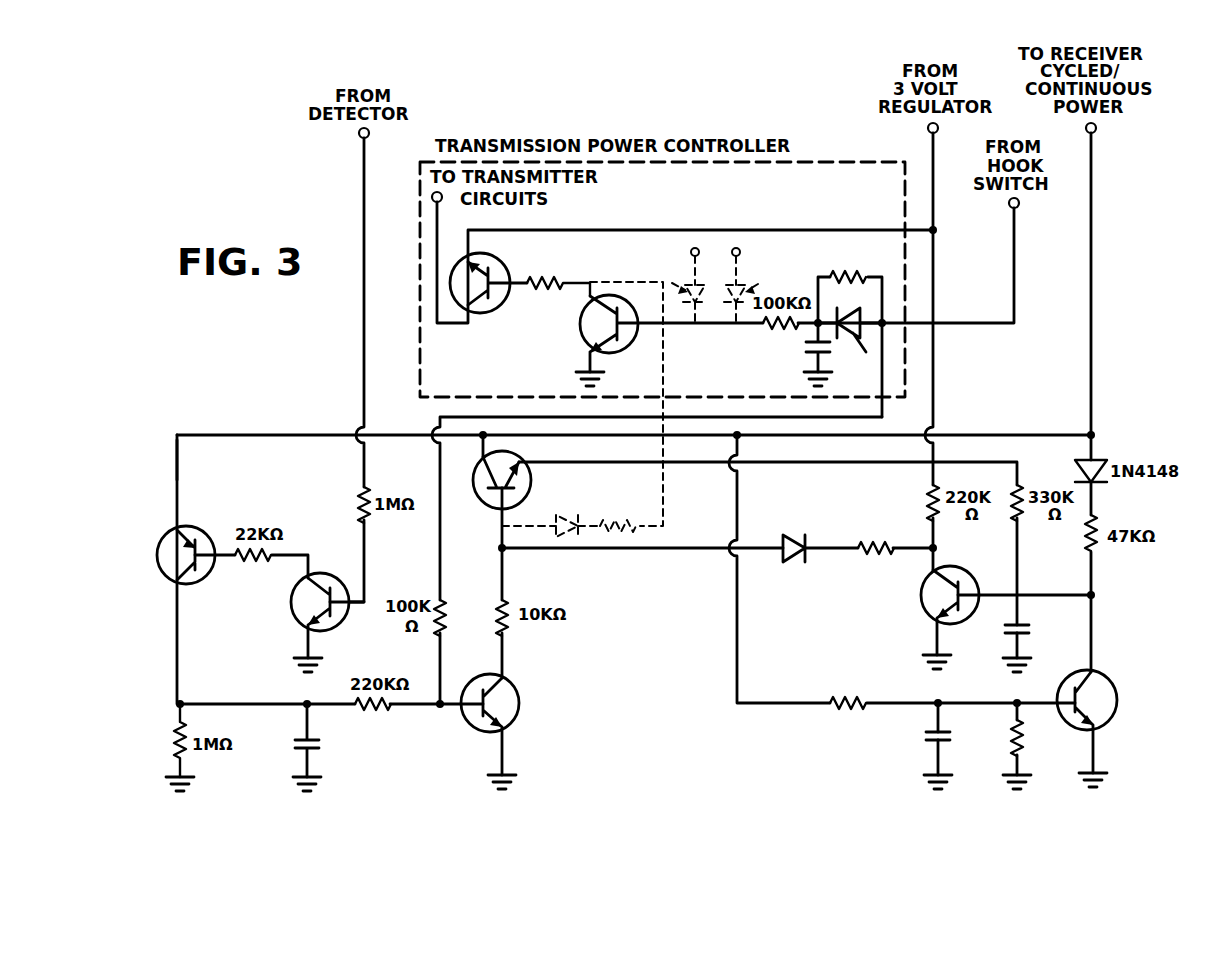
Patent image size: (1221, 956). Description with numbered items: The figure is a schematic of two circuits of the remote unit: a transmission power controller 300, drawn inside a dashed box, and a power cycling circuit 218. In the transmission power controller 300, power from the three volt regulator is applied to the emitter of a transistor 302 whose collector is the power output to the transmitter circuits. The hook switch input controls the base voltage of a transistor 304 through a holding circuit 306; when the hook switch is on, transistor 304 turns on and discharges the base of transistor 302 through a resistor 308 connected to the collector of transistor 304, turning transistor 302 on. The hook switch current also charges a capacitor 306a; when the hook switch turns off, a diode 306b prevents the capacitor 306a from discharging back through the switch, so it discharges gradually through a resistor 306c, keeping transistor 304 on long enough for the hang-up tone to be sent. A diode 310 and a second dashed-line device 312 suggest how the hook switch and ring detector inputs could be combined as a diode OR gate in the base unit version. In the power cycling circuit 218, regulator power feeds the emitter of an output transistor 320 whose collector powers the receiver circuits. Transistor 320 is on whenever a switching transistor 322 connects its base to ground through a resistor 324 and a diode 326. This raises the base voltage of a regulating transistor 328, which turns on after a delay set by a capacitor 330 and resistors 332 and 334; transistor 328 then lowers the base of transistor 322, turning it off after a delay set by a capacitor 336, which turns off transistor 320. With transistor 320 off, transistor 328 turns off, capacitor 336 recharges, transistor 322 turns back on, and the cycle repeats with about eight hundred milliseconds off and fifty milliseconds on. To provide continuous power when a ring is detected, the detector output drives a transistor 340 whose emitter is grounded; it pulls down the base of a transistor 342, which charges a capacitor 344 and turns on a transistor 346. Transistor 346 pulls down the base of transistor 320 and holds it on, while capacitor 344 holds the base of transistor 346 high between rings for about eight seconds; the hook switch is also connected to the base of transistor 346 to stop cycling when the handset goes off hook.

The remote unit power cycling circuit 218 is at (177, 482).
The transmission power controller 300 is at (840, 162).
The transistor 302 is at (500, 266).
The transistor 304 is at (592, 336).
The holding circuit 306 is at (802, 307).
The capacitor 306a is at (806, 343).
The diode 306b is at (850, 339).
The resistor 306c is at (862, 257).
The resistor 308 is at (545, 292).
The diode 310 is at (763, 284).
The light emitting diode 312 is at (672, 280).
The output transistor 320 is at (532, 489).
The switching transistor 322 is at (920, 600).
The resistor 324 is at (860, 540).
The diode 326 is at (790, 535).
The regulating transistor 328 is at (1105, 690).
The capacitor 330 is at (926, 735).
The resistor 332 is at (1012, 738).
The resistor 334 is at (872, 684).
The capacitor 336 is at (1008, 640).
The transistor 340 is at (292, 612).
The transistor 342 is at (200, 532).
The capacitor 344 is at (320, 742).
The transistor 346 is at (521, 704).